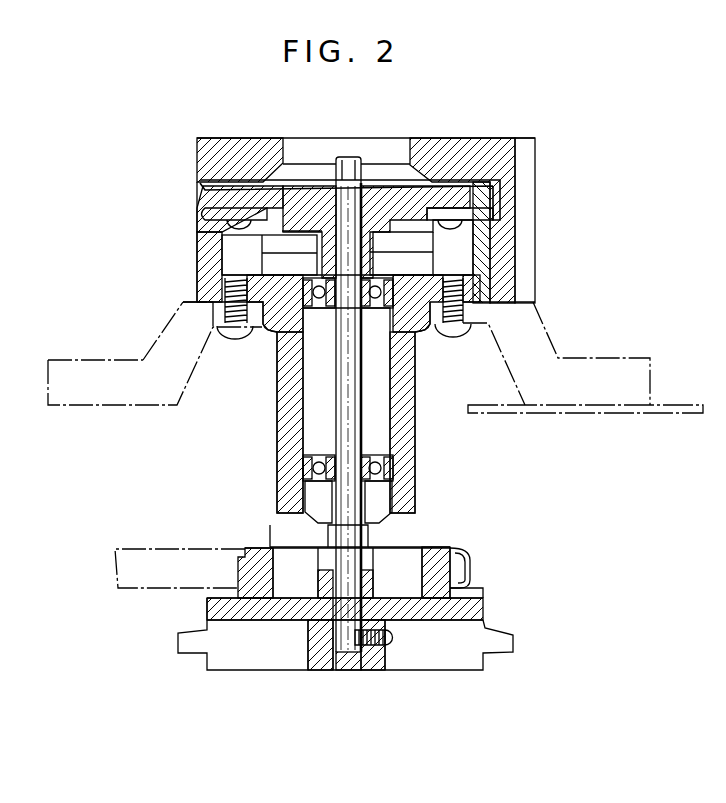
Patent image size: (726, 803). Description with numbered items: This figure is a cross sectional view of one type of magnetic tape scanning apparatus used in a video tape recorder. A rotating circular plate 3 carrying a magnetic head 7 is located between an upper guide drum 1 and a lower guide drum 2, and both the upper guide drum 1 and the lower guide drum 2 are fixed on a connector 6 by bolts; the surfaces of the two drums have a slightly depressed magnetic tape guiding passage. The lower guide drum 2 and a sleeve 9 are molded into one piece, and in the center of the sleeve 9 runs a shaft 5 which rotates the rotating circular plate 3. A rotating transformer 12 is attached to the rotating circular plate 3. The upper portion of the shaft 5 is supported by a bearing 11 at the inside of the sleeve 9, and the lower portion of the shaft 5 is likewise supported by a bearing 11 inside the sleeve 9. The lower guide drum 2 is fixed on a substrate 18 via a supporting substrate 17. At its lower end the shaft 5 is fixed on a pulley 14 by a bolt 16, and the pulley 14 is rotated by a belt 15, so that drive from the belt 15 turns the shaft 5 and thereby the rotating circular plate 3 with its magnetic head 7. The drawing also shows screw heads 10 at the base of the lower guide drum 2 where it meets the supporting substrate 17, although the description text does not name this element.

The upper guide drum 1 is at (205, 158).
The lower guide drum 2 is at (205, 284).
The rotating circular plate 3 is at (203, 203).
The shaft 5 is at (336, 400).
The connector 6 is at (530, 182).
The magnetic head 7 is at (203, 214).
The sleeve 9 is at (408, 453).
The screw 10 is at (462, 328).
The bearing 11 is at (303, 346).
The rotating transformer 12 is at (270, 244).
The pulley 14 is at (208, 607).
The belt 15 is at (162, 558).
The bolt 16 is at (393, 641).
The supporting substrate 17 is at (582, 362).
The substrate 18 is at (668, 414).